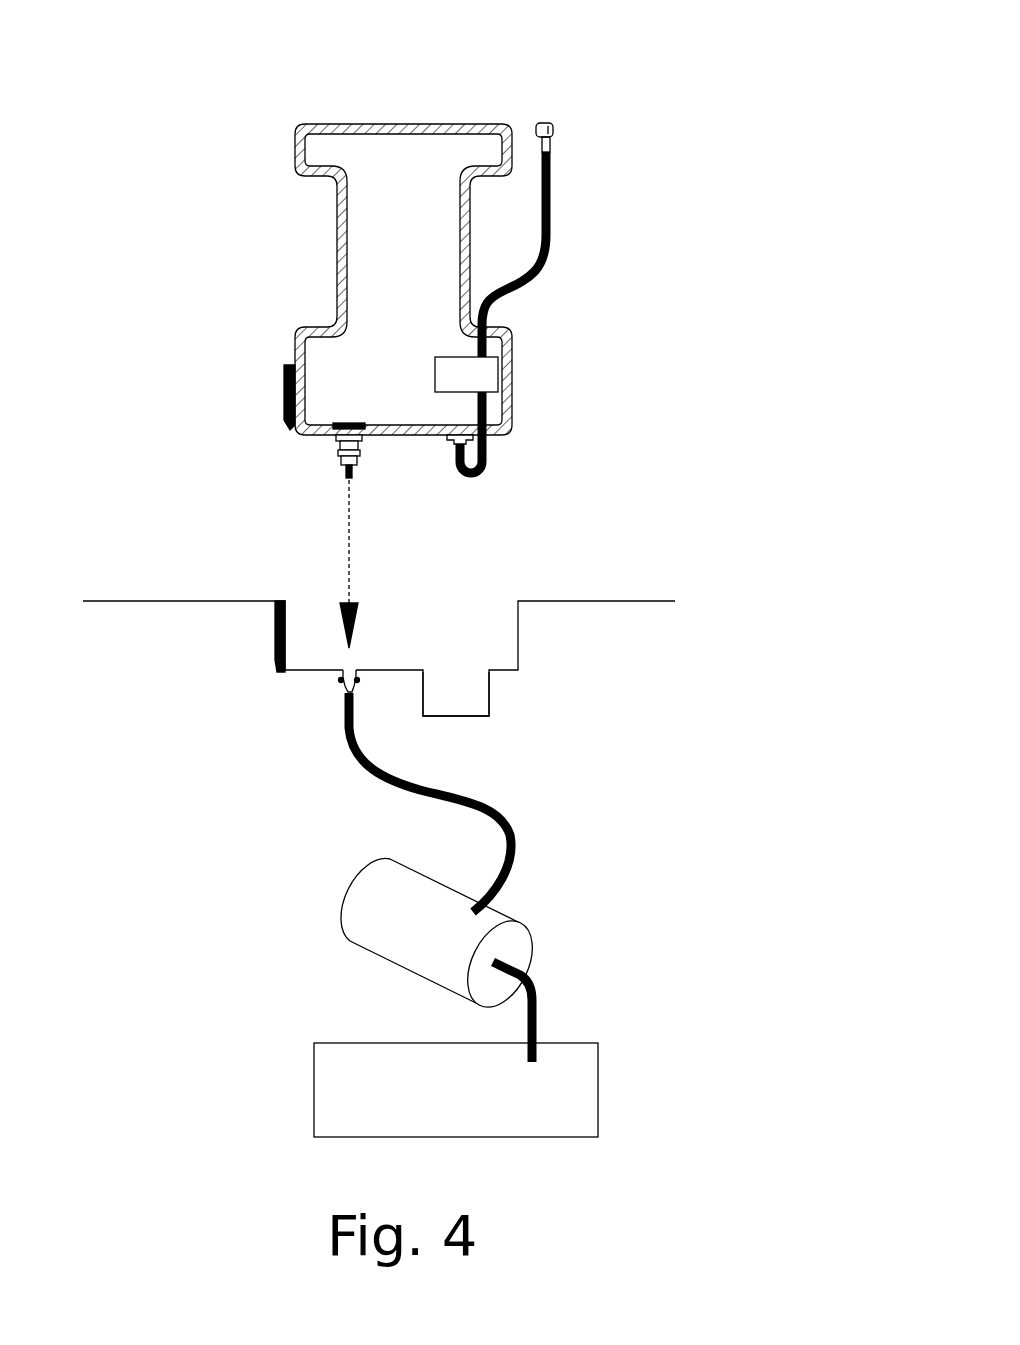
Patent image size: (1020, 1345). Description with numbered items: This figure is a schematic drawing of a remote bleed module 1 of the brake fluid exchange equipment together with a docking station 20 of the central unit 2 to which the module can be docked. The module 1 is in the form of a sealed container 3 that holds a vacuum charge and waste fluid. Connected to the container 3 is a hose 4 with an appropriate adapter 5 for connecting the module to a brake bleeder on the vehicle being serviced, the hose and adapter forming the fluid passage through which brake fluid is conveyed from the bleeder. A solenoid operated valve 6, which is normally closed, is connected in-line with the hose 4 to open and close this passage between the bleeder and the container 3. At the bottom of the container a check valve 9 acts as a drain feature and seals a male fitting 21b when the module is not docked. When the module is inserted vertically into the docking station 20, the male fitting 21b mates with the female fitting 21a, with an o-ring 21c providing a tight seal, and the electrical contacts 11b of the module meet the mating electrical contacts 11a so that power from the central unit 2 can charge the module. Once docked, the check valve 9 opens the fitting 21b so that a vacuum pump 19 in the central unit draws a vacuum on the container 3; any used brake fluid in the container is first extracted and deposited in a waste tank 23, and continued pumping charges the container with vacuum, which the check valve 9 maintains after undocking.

The remote bleed module 1 is at (327, 97).
The central unit 2 is at (642, 644).
The sealed container 3 is at (358, 255).
The hose 4 is at (550, 187).
The adapter 5 is at (553, 132).
The solenoid operated valve 6 is at (490, 376).
The check valve 9 is at (333, 436).
The mating electrical contacts 11a is at (275, 622).
The electrical contacts 11b is at (283, 368).
The vacuum pump 19 is at (357, 902).
The docking station 20 is at (505, 662).
The female fitting 21a is at (349, 665).
The male fitting 21b is at (336, 463).
The o-ring 21c is at (340, 680).
The waste tank 23 is at (328, 1085).